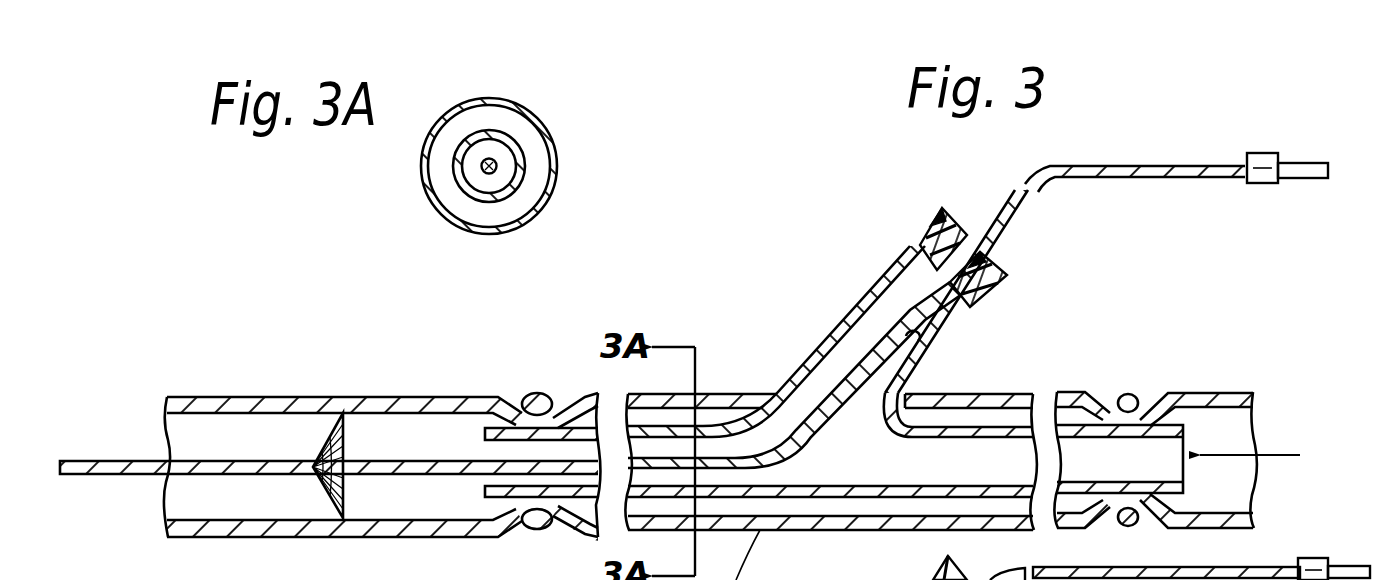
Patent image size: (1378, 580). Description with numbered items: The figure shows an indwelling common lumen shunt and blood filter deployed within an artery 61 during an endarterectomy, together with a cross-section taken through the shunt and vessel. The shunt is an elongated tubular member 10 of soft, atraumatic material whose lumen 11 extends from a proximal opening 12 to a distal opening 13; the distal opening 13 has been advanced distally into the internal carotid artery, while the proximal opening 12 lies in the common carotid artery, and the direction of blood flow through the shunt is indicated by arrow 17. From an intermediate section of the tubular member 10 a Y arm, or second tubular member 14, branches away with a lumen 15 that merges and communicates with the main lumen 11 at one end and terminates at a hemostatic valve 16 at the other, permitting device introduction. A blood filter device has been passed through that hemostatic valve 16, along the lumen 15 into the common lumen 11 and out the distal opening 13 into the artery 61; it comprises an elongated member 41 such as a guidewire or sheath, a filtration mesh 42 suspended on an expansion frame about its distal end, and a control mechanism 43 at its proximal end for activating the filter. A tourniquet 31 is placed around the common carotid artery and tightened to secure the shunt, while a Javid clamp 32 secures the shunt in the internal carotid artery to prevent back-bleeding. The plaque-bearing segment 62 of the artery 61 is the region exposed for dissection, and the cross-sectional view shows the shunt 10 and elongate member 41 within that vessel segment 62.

In FIG. 3A, the elongated tubular member 10 is at (480, 132).
In FIG. 3, the elongated tubular member 10 is at (1003, 413).
In FIG. 3, the lumen 11 is at (887, 486).
In FIG. 3, the proximal opening 12 is at (1172, 443).
In FIG. 3, the distal opening 13 is at (497, 445).
In FIG. 3, the second tubular member 14 is at (828, 338).
In FIG. 3, the lumen 15 is at (925, 336).
In FIG. 3, the hemostatic valve 16 is at (953, 222).
In FIG. 3, the arrow 17 is at (1300, 455).
In FIG. 3, the tourniquet 31 is at (1135, 396).
In FIG. 3, the Javid clamp 32 is at (534, 394).
In FIG. 3A, the elongated member 41 is at (487, 166).
In FIG. 3, the elongated member 41 is at (1113, 166).
In FIG. 3, the filtration mesh 42 is at (310, 413).
In FIG. 3, the control mechanism 43 is at (1262, 185).
In FIG. 3, the artery 61 is at (287, 537).
In FIG. 3A, the segment 62 is at (553, 163).